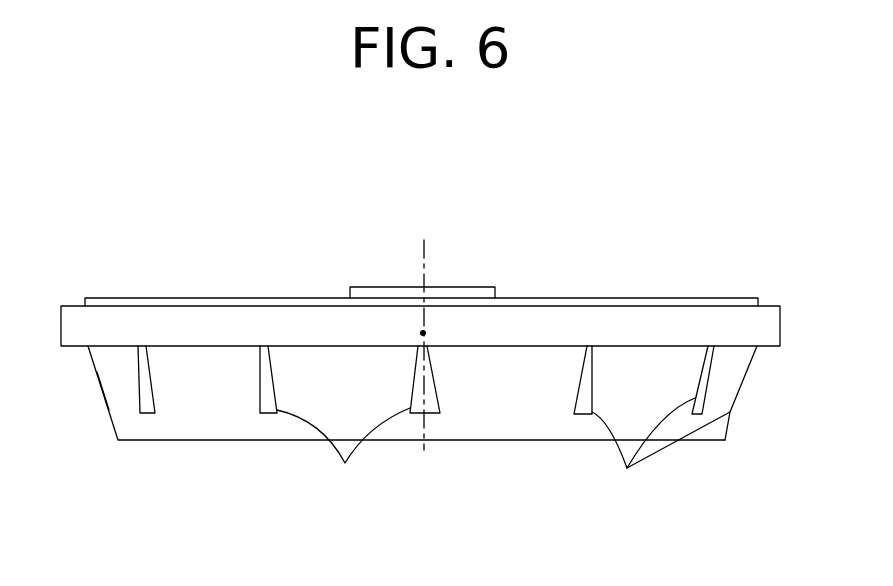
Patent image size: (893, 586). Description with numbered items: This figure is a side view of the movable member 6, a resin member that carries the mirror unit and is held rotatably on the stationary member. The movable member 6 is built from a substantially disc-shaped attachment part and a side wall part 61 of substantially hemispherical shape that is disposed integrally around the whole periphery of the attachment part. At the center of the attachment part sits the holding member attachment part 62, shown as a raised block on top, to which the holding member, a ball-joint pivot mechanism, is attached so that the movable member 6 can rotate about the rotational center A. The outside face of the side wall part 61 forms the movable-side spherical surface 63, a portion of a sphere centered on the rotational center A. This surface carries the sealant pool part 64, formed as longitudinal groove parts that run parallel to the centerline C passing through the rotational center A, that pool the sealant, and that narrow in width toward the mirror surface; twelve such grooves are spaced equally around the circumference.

The movable member 6 is at (558, 260).
The side wall part 61 is at (493, 385).
The holding member attachment part 62 is at (355, 287).
The movable-side spherical surface 63 is at (421, 401).
The sealant pool part 64 is at (143, 410).
The rotational center A is at (425, 332).
The centerline C is at (430, 253).